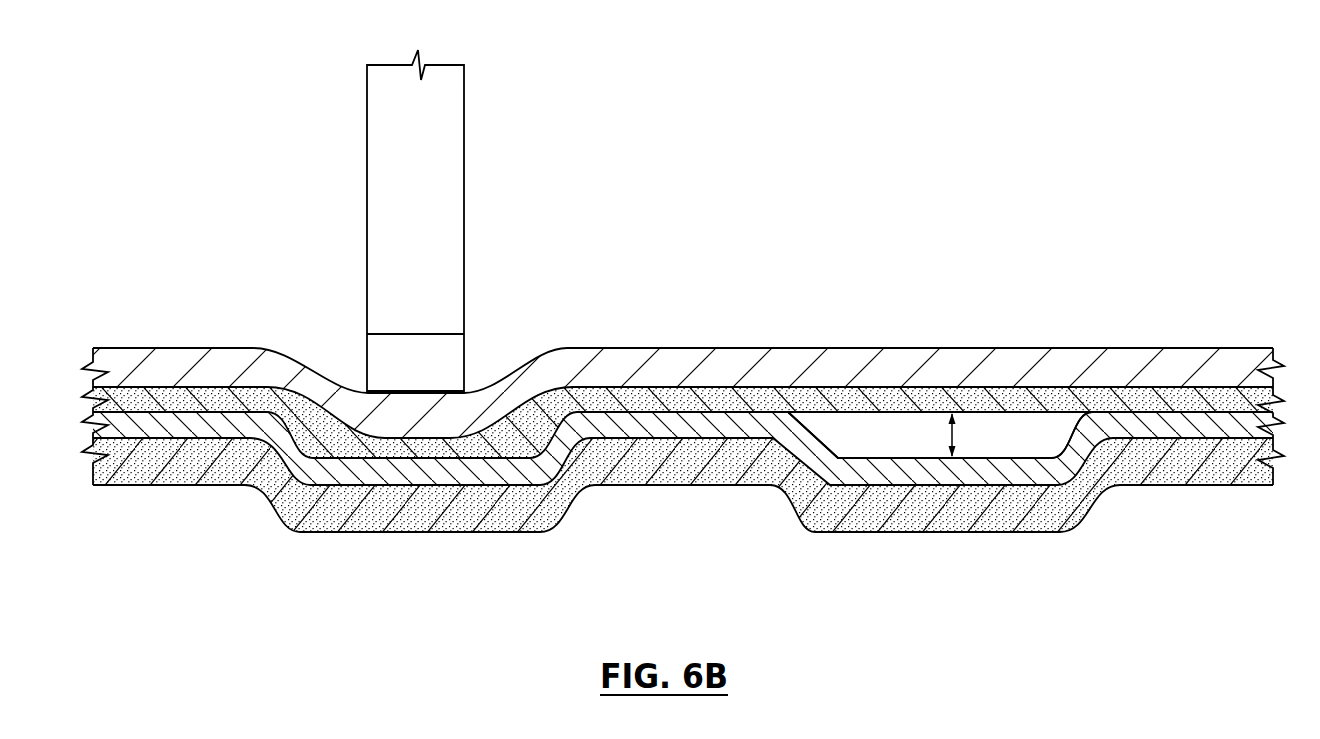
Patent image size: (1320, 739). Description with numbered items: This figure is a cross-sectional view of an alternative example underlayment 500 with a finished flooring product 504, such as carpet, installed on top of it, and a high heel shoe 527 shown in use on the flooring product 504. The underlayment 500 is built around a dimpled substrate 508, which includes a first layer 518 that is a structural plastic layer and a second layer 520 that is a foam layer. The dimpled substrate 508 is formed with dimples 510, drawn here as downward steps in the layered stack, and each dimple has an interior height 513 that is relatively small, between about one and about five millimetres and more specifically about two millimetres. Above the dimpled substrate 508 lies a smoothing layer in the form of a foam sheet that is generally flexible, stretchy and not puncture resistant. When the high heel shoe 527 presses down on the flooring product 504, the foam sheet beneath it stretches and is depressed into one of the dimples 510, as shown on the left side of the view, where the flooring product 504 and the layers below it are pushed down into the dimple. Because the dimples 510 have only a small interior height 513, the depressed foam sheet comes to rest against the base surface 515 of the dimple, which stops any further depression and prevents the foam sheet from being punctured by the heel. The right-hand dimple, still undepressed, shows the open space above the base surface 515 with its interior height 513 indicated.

The underlayment 500 is at (752, 576).
The flooring product 504 is at (607, 363).
The dimpled substrate 508 is at (822, 428).
The dimples 510 is at (519, 514).
The interior height 513 is at (953, 443).
The base surface 515 is at (910, 433).
The first layer 518 is at (623, 430).
The second layer 520 is at (653, 462).
The high heel shoe 527 is at (445, 153).